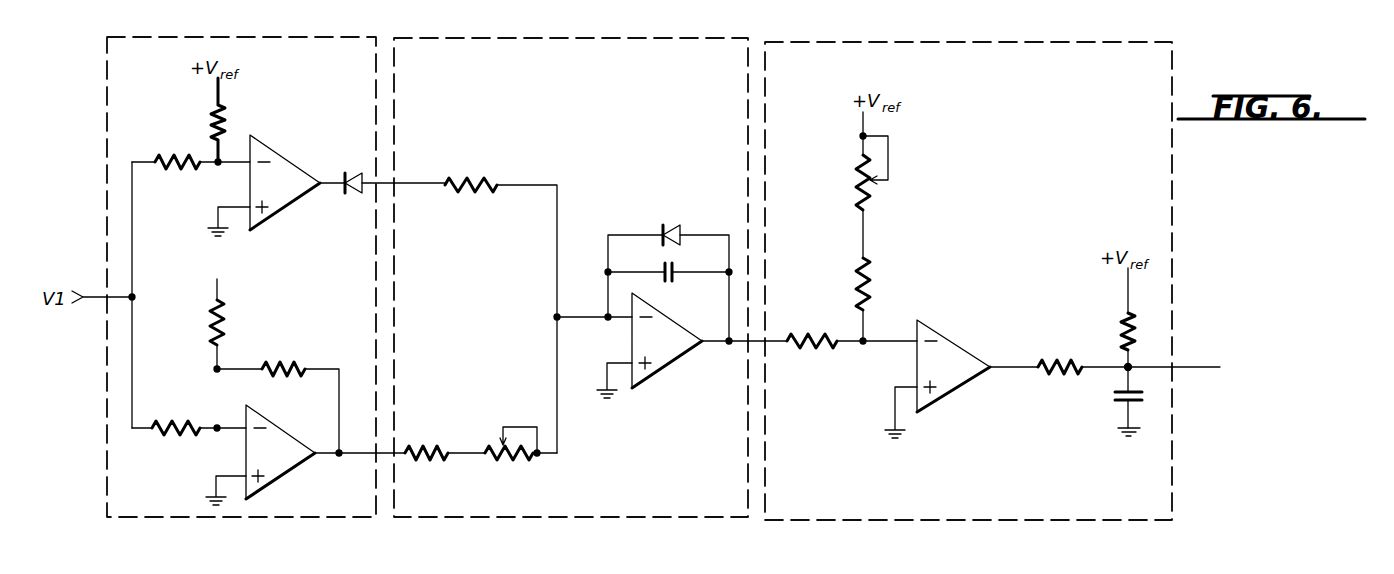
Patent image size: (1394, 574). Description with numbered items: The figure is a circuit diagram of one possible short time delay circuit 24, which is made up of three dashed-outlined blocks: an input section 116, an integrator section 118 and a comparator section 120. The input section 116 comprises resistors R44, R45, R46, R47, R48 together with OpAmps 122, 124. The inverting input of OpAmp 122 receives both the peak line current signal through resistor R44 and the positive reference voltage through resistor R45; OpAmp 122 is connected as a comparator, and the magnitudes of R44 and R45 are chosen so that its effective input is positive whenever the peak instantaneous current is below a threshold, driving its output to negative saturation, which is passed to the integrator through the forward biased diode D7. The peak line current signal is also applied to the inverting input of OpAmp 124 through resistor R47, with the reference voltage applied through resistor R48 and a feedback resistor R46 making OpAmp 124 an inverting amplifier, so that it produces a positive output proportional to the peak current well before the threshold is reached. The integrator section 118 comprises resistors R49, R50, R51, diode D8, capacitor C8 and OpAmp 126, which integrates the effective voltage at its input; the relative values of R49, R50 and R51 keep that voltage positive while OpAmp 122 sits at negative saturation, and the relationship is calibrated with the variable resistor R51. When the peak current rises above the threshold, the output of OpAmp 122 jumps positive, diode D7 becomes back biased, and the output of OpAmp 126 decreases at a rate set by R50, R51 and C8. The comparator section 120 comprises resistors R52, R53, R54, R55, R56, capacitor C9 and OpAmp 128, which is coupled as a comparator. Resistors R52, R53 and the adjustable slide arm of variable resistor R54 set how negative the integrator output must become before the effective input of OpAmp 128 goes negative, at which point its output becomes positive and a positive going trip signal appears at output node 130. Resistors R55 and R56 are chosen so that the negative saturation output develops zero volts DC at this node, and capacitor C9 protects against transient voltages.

The short time delay circuit 24 is at (1198, 56).
The input section 116 is at (267, 13).
The integrator section 118 is at (582, 14).
The comparator section 120 is at (968, 18).
The OpAmp 122 is at (276, 222).
The OpAmp 124 is at (278, 482).
The OpAmp 126 is at (655, 373).
The OpAmp 128 is at (950, 396).
The output node 130 is at (1125, 370).
The resistor R44 is at (181, 154).
The resistor R45 is at (225, 133).
The resistor R46 is at (294, 351).
The resistor R47 is at (186, 409).
The resistor R48 is at (213, 318).
The feedback resistor R49 is at (476, 181).
The resistor R50 is at (443, 428).
The variable resistor R51 is at (518, 460).
The resistor R52 is at (818, 323).
The resistor R53 is at (871, 291).
The variable resistor R54 is at (855, 163).
The resistor R55 is at (1069, 348).
The resistor R56 is at (1121, 320).
The diode D7 is at (349, 172).
The diode D8 is at (681, 232).
The capacitor C8 is at (674, 274).
The capacitor C9 is at (1113, 401).